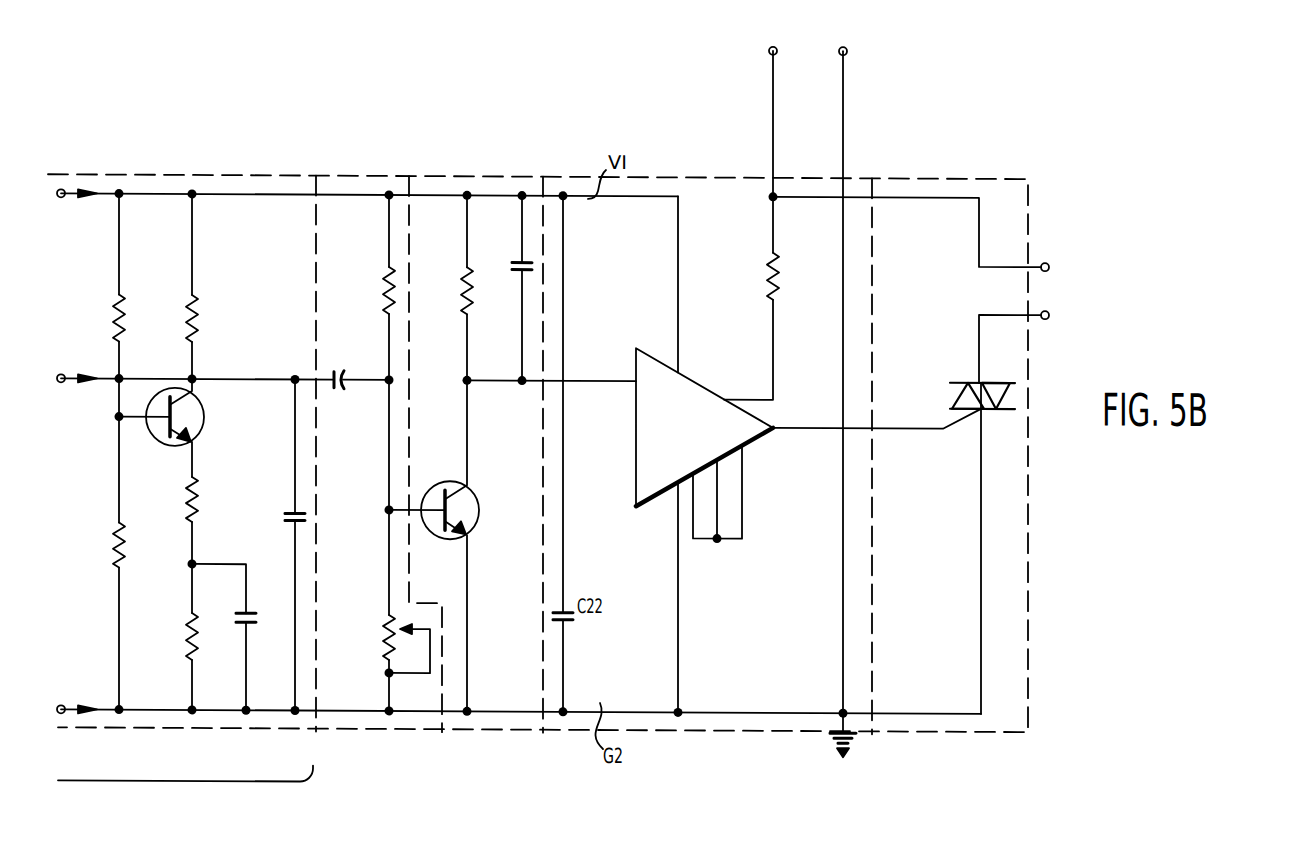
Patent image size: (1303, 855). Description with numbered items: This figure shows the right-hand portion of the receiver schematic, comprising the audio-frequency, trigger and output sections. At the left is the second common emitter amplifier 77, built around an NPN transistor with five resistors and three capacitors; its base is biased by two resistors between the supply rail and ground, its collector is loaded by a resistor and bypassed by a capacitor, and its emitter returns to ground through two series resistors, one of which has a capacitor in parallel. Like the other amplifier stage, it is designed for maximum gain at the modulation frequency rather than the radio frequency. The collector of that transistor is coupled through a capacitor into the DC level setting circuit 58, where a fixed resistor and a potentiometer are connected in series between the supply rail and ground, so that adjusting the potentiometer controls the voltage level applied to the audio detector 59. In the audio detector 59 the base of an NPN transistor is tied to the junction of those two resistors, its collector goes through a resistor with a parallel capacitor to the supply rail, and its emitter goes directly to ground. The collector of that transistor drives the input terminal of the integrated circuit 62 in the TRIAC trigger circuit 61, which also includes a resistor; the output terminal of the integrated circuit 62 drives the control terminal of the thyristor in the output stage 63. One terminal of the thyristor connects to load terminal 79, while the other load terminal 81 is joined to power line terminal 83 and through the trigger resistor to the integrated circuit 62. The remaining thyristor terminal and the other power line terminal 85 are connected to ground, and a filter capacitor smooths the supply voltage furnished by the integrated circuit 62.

The second common emitter amplifier 77 is at (140, 700).
The DC level setting circuit 58 is at (322, 700).
The audio detector 59 is at (485, 700).
The TRIAC trigger circuit 61 is at (791, 404).
The integrated circuit 62 is at (636, 478).
The output stage 63 is at (982, 505).
The load terminal 79 is at (1049, 307).
The other load terminal 81 is at (1049, 259).
The power line terminal 83 is at (768, 48).
The other power line terminal 85 is at (838, 48).